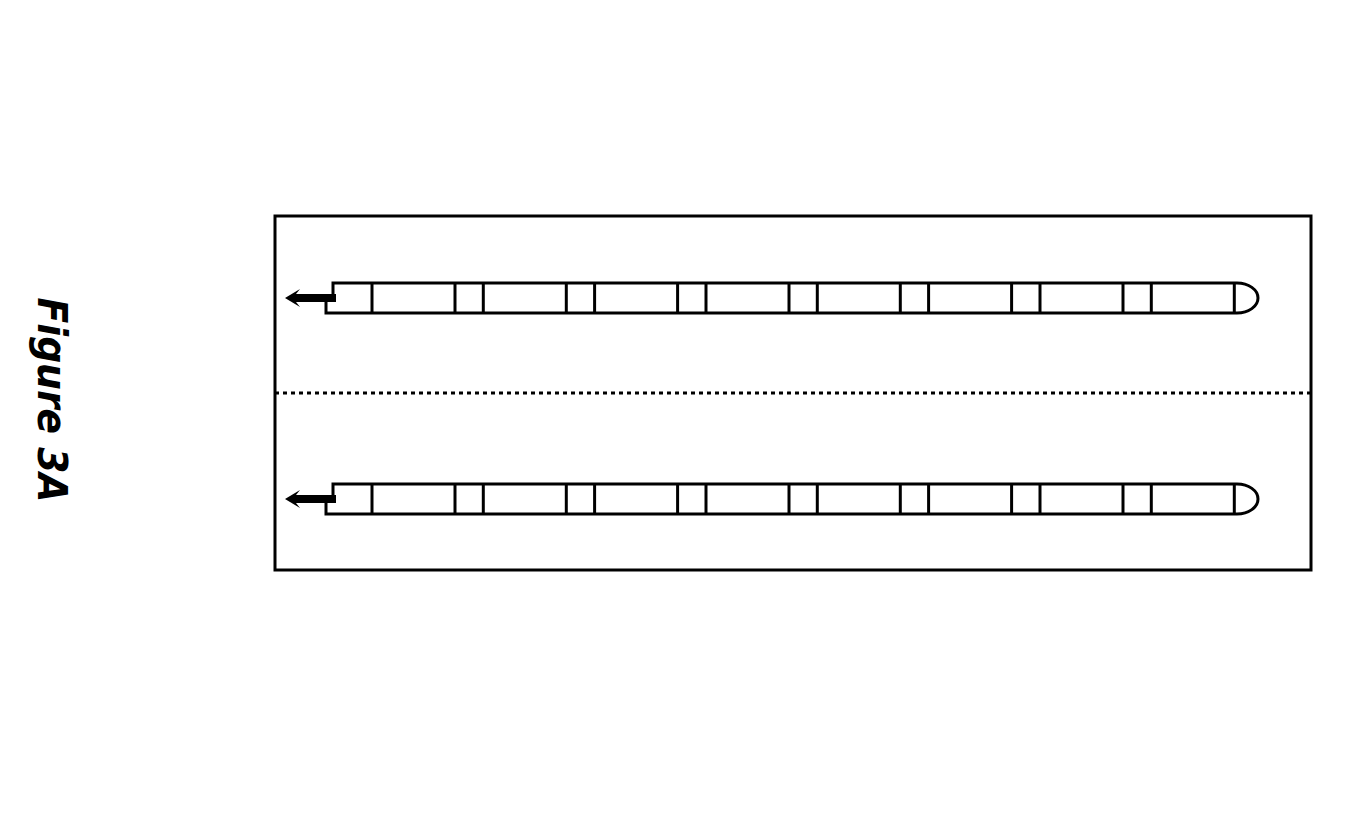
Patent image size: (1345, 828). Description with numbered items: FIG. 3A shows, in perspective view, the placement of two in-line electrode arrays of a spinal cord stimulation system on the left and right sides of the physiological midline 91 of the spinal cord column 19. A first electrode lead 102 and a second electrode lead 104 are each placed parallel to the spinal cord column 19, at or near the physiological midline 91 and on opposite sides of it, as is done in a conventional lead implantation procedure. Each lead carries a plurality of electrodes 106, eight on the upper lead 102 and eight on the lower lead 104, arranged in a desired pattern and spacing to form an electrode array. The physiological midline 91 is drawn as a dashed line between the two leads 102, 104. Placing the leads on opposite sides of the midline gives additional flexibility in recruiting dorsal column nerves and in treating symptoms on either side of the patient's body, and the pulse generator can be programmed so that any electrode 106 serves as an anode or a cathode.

The spinal cord column 19 is at (942, 215).
The physiological midline 91 is at (318, 393).
The electrode lead 102 is at (812, 221).
The electrode lead 104 is at (1280, 500).
The electrodes 106 is at (727, 295).